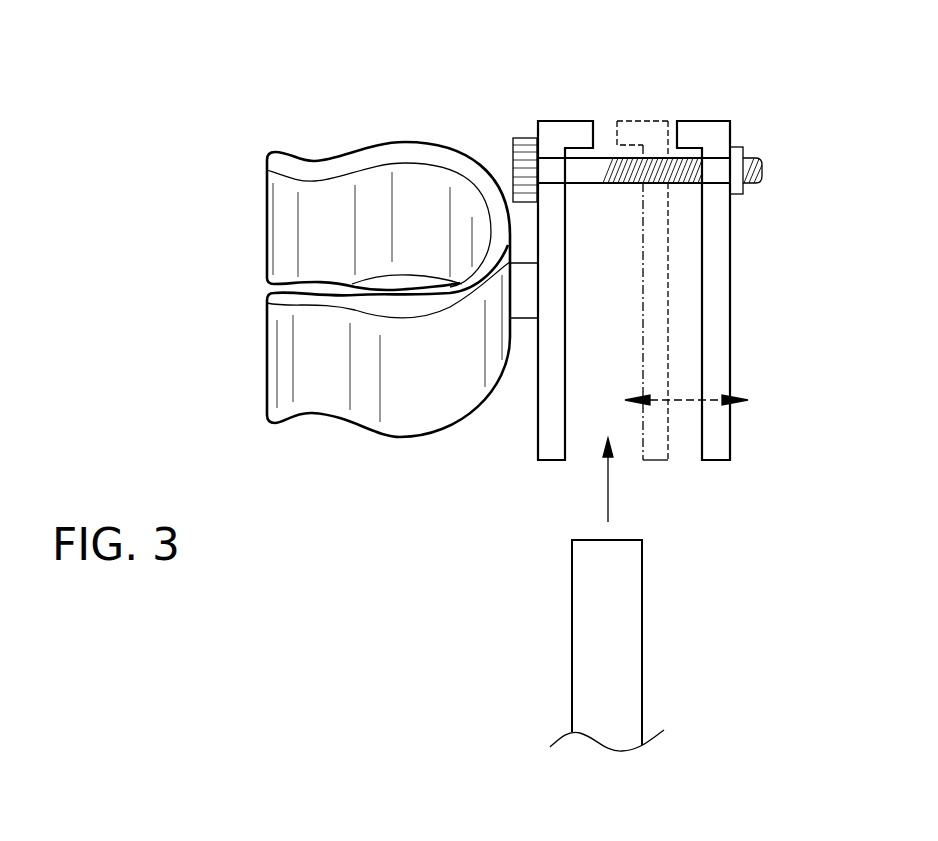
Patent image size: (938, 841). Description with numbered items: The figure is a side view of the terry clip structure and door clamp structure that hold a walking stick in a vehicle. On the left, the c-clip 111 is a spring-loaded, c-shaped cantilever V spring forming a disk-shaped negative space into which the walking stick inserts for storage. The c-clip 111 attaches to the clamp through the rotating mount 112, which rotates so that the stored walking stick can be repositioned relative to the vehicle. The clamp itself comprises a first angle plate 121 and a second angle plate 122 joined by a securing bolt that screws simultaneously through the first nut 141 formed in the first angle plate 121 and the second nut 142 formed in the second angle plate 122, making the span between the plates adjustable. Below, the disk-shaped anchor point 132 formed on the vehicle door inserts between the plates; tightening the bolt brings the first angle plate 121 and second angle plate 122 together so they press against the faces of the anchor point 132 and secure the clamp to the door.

The c-clip 111 is at (397, 410).
The rotating mount 112 is at (525, 307).
The first angle plate 121 is at (553, 355).
The second angle plate 122 is at (718, 320).
The anchor point 132 is at (615, 652).
The first nut 141 is at (555, 160).
The second nut 142 is at (717, 165).